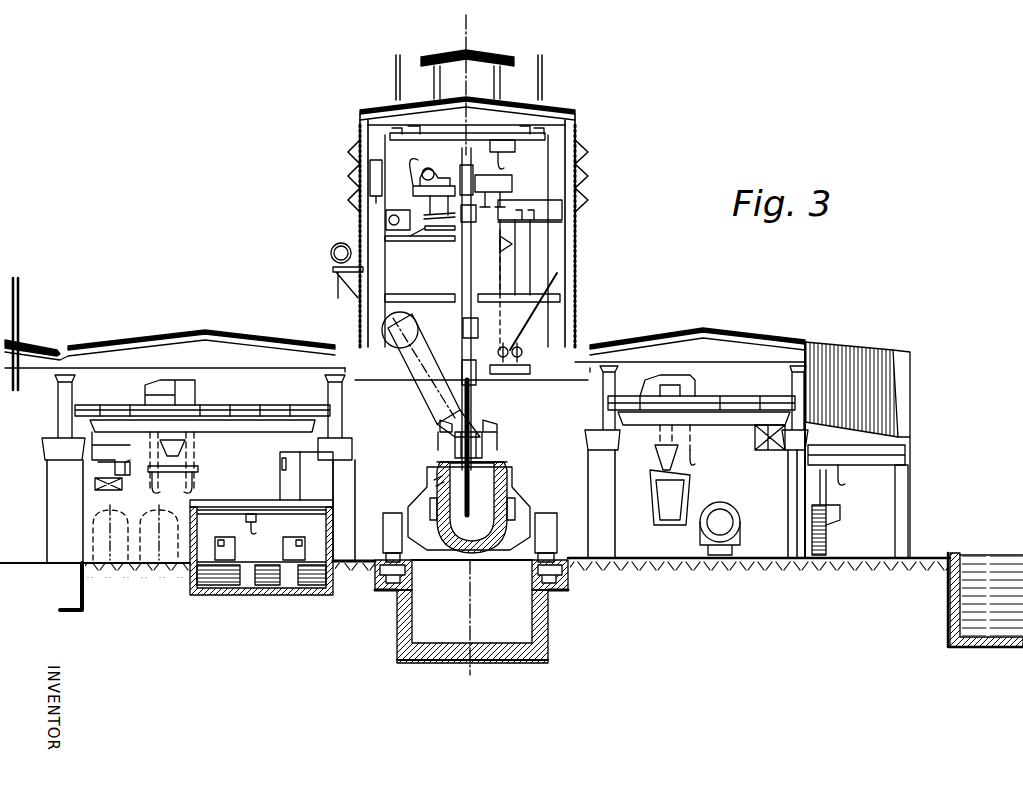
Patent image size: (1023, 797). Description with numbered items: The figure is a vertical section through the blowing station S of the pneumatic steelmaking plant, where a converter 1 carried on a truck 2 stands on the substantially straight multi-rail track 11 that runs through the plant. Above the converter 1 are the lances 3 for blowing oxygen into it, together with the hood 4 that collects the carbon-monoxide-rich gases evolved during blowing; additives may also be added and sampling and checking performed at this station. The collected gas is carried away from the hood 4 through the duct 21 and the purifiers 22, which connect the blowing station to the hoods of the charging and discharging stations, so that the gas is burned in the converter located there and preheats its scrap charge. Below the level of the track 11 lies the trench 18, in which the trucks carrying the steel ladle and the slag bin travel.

The converter 1 is at (496, 480).
The truck 2 is at (548, 518).
The lance 3 is at (478, 454).
The hood 4 is at (455, 452).
The multi-rail track 11 is at (374, 585).
The trench 18 is at (518, 625).
The duct 21 is at (430, 383).
The purifier 22 is at (395, 277).